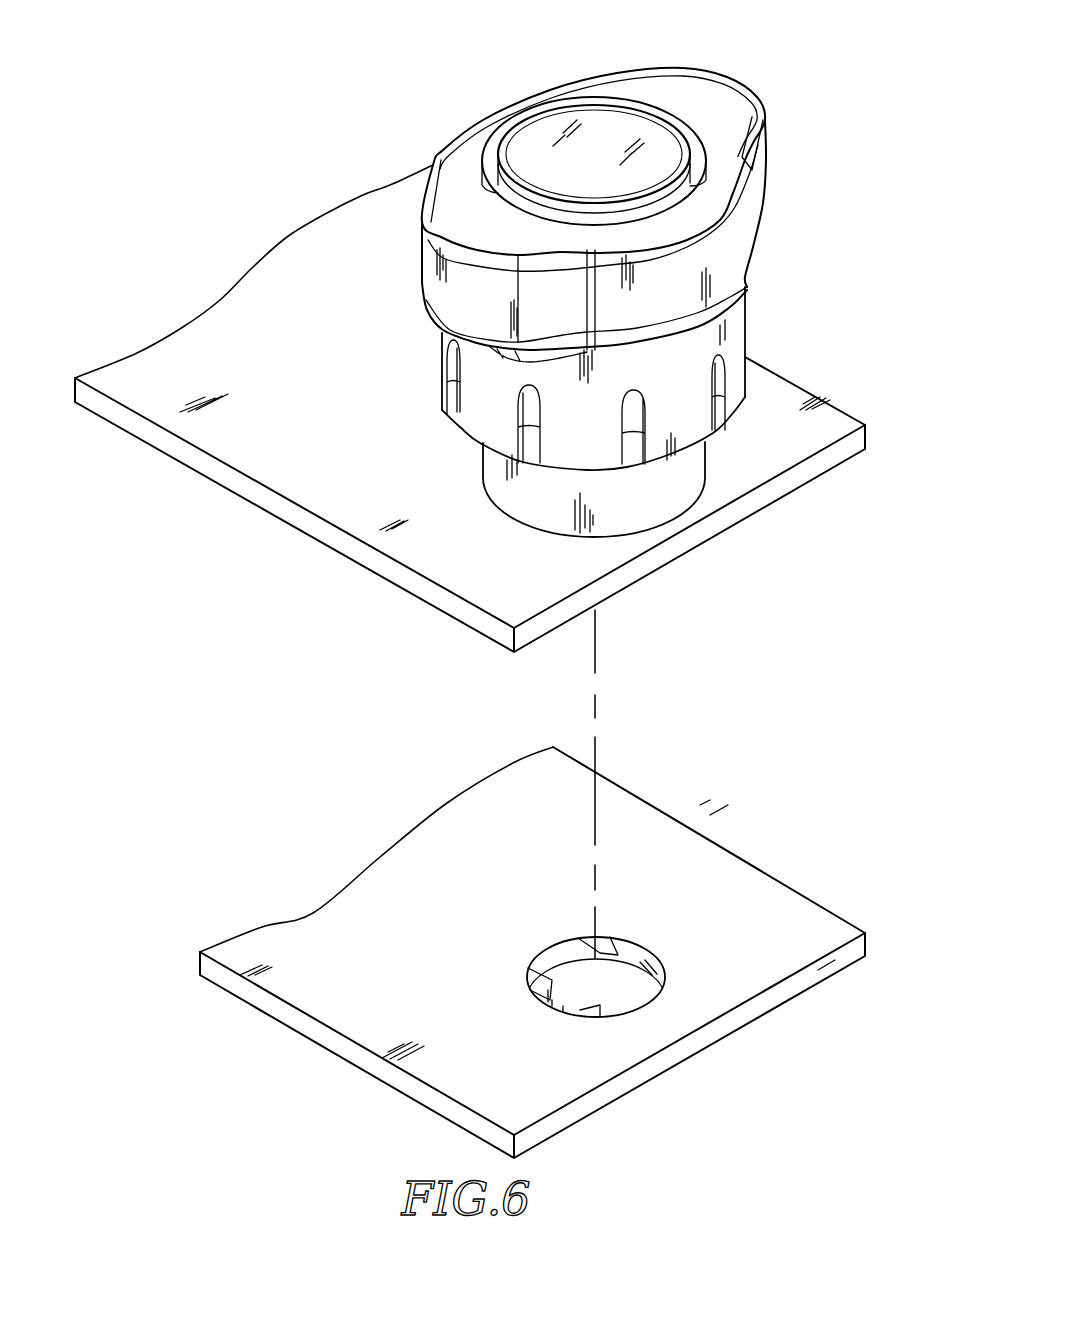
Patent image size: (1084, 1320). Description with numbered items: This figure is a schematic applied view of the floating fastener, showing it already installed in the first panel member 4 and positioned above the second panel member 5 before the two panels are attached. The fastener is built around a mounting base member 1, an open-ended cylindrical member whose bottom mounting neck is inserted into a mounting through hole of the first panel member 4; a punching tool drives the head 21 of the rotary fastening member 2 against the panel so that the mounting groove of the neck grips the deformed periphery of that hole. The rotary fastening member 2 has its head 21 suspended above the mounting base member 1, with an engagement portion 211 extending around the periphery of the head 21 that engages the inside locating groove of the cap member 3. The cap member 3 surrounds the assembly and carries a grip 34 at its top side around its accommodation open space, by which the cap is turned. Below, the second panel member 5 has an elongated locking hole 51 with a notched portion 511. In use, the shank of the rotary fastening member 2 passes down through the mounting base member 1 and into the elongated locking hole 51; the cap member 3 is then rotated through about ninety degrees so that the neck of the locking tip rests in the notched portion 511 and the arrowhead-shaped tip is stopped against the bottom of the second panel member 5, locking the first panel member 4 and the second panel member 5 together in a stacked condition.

The mounting base member 1 is at (672, 490).
The rotary fastening member 2 is at (535, 108).
The head 21 is at (585, 113).
The engagement portion 211 is at (492, 172).
The cap member 3 is at (733, 335).
The grip 34 is at (753, 178).
The first panel member 4 is at (617, 580).
The second panel member 5 is at (770, 963).
The elongated locking hole 51 is at (607, 960).
The notched portion 511 is at (577, 972).